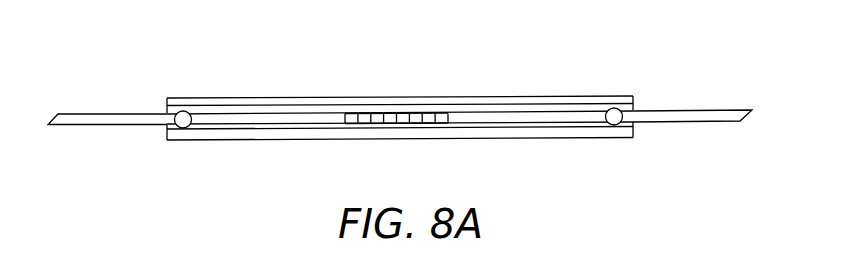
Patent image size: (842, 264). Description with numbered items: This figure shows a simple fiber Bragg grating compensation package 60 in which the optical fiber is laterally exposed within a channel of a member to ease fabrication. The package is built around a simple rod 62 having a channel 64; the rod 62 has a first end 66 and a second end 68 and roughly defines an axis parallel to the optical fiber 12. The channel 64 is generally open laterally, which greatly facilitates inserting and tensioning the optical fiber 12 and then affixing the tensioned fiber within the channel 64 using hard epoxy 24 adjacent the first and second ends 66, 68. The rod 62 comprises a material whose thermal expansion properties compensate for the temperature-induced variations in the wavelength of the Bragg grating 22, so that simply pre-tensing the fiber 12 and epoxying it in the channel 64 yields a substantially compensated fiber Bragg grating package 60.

The optical fiber 12 is at (403, 140).
The Bragg grating 22 is at (399, 151).
The hard epoxy 24 is at (360, 85).
The optical fiber compensation package 60 is at (401, 96).
The rod 62 is at (400, 75).
The channel 64 is at (400, 160).
The first end 66 is at (672, 104).
The second end 68 is at (128, 131).